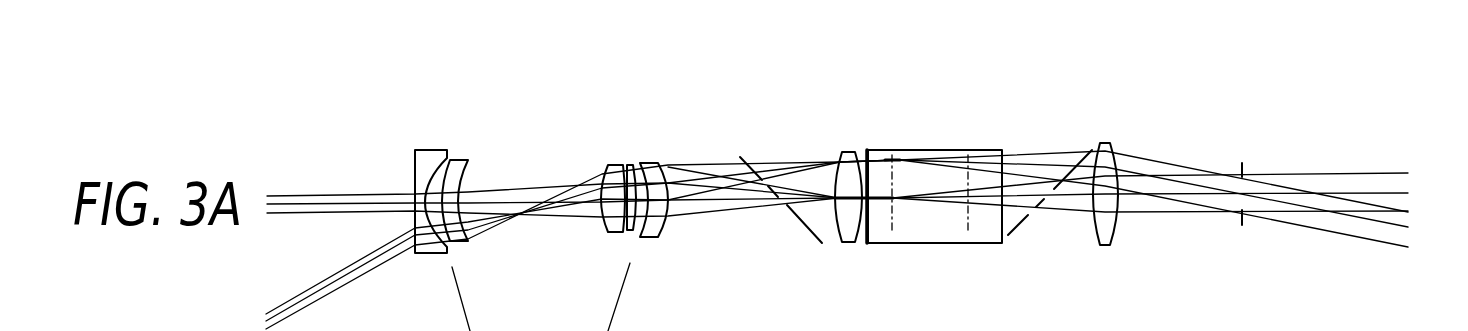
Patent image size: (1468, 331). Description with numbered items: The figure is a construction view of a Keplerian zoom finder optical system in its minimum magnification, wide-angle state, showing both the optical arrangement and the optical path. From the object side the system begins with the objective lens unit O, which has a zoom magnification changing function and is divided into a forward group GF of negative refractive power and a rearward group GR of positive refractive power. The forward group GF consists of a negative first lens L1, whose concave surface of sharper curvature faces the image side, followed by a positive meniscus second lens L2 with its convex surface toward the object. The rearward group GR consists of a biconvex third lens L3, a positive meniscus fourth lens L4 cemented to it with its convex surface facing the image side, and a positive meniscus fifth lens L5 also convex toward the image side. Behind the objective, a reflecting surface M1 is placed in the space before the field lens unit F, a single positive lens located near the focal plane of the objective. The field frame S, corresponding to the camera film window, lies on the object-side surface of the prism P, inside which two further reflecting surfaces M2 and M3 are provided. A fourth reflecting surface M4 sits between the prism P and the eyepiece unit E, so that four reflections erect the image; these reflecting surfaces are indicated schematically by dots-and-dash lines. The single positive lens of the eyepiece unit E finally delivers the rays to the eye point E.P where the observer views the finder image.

The objective lens unit O is at (667, 43).
The forward group GF is at (482, 92).
The rearward group GR is at (702, 92).
The first lens L1 is at (427, 148).
The second lens L2 is at (467, 158).
The third lens L3 is at (605, 163).
The fourth lens L4 is at (627, 165).
The fifth lens L5 is at (648, 160).
The reflecting surface M1 is at (807, 232).
The field lens unit F is at (868, 126).
The field frame S is at (863, 237).
The prism P is at (1003, 126).
The reflecting surface M2 is at (900, 227).
The reflecting surface M3 is at (963, 228).
The reflecting surface M4 is at (1022, 227).
The eyepiece unit E is at (1113, 126).
The eye point E.P is at (1240, 192).